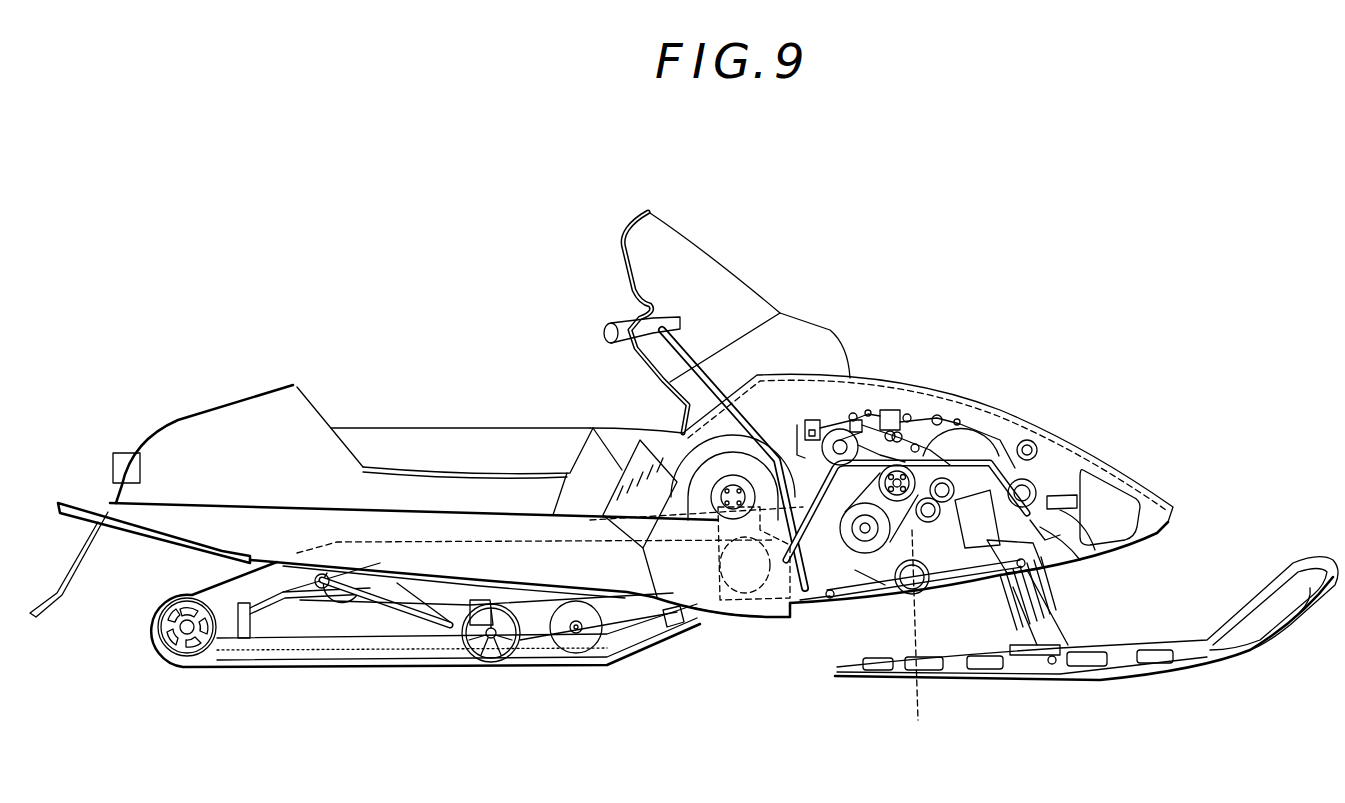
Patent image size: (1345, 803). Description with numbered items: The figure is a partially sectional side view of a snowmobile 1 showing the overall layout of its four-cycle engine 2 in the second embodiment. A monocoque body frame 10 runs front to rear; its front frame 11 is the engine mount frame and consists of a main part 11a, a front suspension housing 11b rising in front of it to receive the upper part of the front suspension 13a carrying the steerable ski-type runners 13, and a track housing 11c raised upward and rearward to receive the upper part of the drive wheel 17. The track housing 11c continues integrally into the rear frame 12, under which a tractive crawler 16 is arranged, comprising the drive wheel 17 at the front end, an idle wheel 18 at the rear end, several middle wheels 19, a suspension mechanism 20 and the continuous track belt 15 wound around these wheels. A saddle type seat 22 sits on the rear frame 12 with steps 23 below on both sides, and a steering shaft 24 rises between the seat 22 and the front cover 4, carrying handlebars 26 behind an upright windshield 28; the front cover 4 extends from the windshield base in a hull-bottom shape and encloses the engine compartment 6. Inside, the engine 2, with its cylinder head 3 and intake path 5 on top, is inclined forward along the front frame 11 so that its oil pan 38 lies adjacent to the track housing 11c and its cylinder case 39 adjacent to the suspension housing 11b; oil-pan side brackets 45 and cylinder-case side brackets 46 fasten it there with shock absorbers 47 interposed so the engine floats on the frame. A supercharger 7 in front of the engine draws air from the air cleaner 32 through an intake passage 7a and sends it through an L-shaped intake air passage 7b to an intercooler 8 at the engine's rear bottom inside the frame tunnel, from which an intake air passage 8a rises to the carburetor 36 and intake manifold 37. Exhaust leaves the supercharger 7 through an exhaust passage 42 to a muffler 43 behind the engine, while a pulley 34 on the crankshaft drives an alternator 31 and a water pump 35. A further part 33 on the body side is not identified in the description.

The snowmobile 1 is at (540, 323).
The four-cycle engine 2 is at (1003, 408).
The cylinder head 3 is at (963, 427).
The front cover 4 is at (1097, 453).
The intake path 5 is at (888, 402).
The engine compartment 6 is at (1070, 467).
The supercharger 7 is at (1073, 467).
The intake passage 7a is at (1100, 538).
The intake air passage 7b is at (750, 580).
The intercooler 8 is at (790, 590).
The intake air passage 8a is at (778, 425).
The body frame 10 is at (620, 605).
The front frame 11 is at (960, 600).
The main part 11a is at (880, 560).
The front suspension housing 11b is at (1020, 673).
The track housing 11c is at (737, 620).
The rear frame 12 is at (207, 530).
The ski-type runners 13 is at (1203, 653).
The front suspension 13a is at (1097, 677).
The track belt 15 is at (500, 663).
The tractive crawler 16 is at (527, 680).
The drive wheel 17 is at (700, 600).
The idle wheel 18 is at (173, 660).
The middle wheels 19 is at (593, 633).
The suspension mechanism 20 is at (387, 590).
The saddle type seat 22 is at (452, 436).
The steps 23 is at (530, 515).
The steering shaft 24 is at (690, 353).
The handlebars 26 is at (618, 326).
The windshield 28 is at (700, 262).
The alternator 31 is at (843, 423).
The air cleaner 32 is at (1117, 496).
The vent 33 is at (690, 453).
The pulley 34 is at (855, 555).
The water pump 35 is at (915, 650).
The carburetor 36 is at (815, 440).
The intake manifold 37 is at (933, 412).
The oil pan 38 is at (890, 597).
The cylinder case 39 is at (960, 568).
The exhaust passage 42 is at (947, 560).
The muffler 43 is at (870, 577).
The oil-pan side brackets 45 is at (810, 600).
The cylinder-case side brackets 46 is at (1077, 517).
The shock absorbers 47 is at (1033, 530).